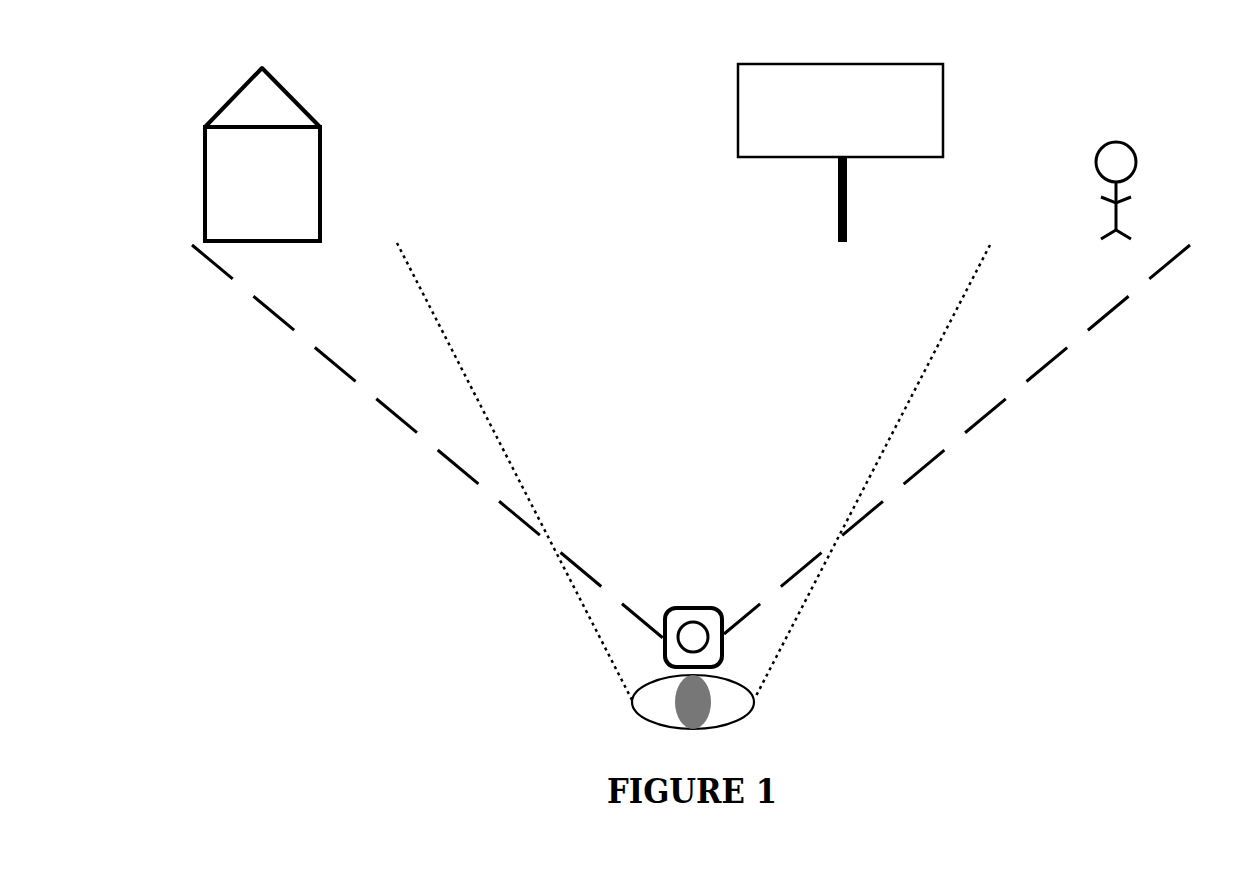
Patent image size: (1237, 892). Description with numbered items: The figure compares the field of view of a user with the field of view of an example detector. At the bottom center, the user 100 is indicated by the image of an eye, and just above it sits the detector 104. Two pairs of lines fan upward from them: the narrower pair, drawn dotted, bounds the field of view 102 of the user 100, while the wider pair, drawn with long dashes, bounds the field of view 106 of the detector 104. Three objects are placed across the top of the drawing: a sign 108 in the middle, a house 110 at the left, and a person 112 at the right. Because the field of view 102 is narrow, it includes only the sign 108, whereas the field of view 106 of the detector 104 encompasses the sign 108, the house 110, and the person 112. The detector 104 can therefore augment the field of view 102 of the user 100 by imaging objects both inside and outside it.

The user 100 is at (733, 727).
The field of view of the user 102 is at (978, 270).
The detector 104 is at (697, 608).
The field of view of the detector 106 is at (1050, 360).
The sign 108 is at (848, 200).
The house 110 is at (323, 202).
The person 112 is at (1122, 210).